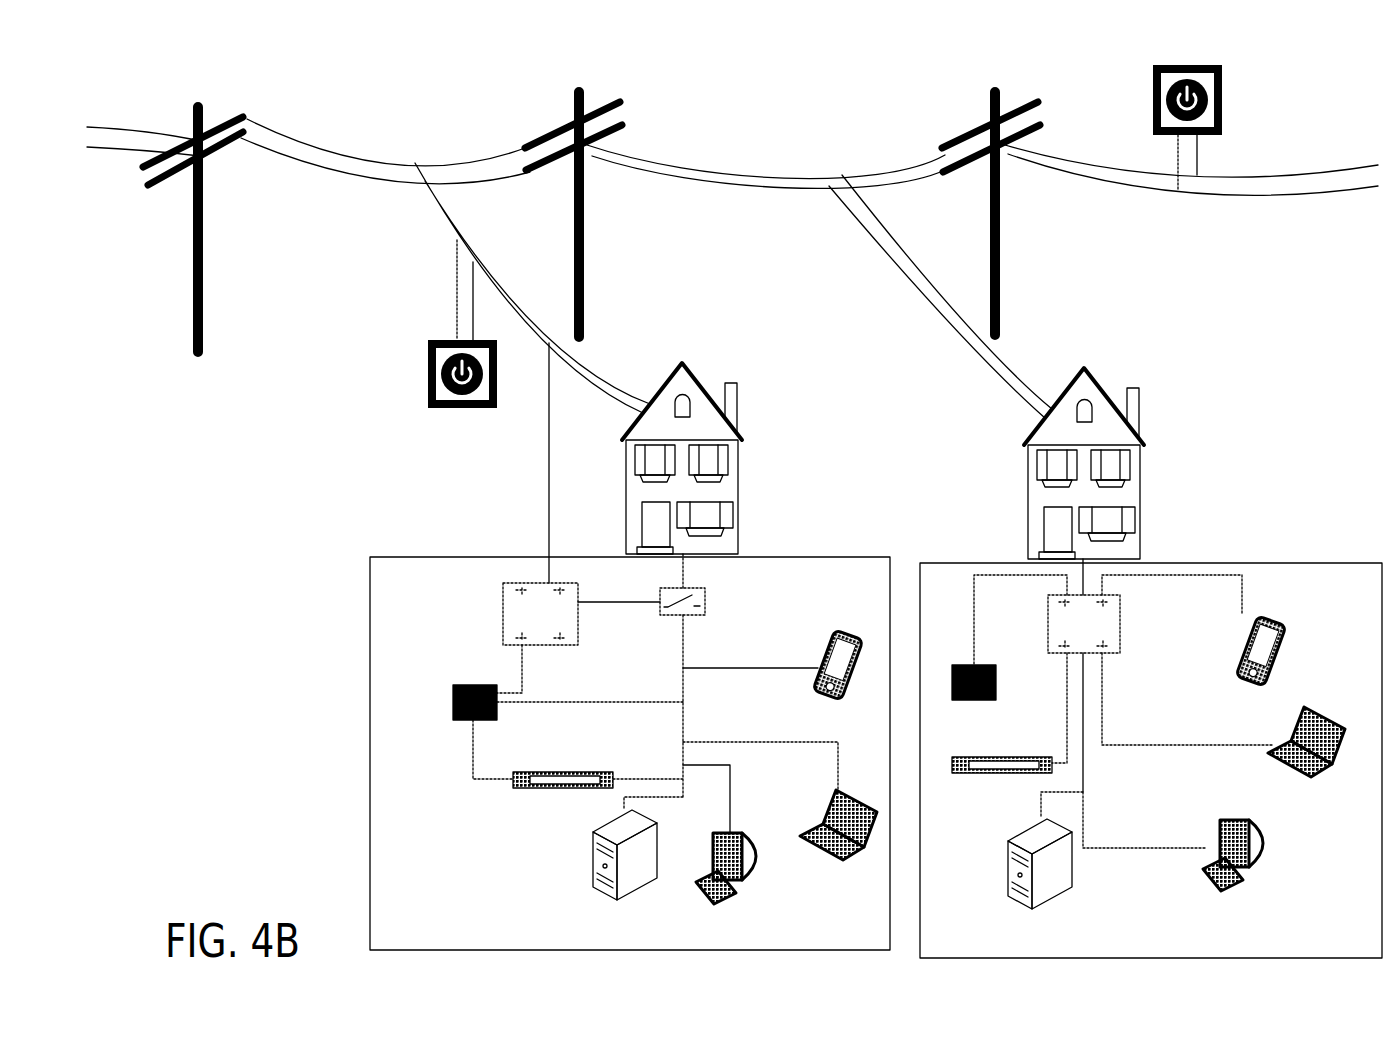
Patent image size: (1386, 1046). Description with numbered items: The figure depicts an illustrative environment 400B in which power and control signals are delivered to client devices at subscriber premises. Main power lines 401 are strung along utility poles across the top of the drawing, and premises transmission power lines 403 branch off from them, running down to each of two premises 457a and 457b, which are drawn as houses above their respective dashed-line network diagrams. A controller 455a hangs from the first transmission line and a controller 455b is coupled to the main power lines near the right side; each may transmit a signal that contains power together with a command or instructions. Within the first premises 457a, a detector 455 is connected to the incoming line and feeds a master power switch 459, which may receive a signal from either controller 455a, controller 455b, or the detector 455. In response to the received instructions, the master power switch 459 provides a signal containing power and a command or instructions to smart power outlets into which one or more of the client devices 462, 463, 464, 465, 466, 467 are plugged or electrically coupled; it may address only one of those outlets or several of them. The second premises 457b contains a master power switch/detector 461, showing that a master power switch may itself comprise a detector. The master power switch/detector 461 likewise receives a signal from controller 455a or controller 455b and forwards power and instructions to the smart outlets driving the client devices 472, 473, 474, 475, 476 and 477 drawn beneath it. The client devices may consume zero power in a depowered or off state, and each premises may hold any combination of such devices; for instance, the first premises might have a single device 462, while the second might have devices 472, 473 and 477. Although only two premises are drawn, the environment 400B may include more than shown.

The environment 400B is at (787, 64).
The main power lines 401 is at (323, 142).
The premises transmission power lines 403 is at (443, 222).
The controller 455a is at (427, 338).
The controller 455b is at (1150, 93).
The detector 455 is at (540, 632).
The premises 457a is at (682, 362).
The premises 457b is at (1088, 358).
The master power switch 459 is at (707, 598).
The master power switch/detector 461 is at (1125, 600).
The client device 462 is at (475, 720).
The client device 463 is at (563, 797).
The client device 464 is at (726, 884).
The client device 465 is at (838, 840).
The client device 466 is at (838, 683).
The client device 467 is at (625, 873).
The client device 472 is at (974, 700).
The client device 473 is at (1002, 778).
The client device 474 is at (1233, 870).
The client device 475 is at (1306, 756).
The client device 476 is at (1261, 668).
The client device 477 is at (1040, 882).